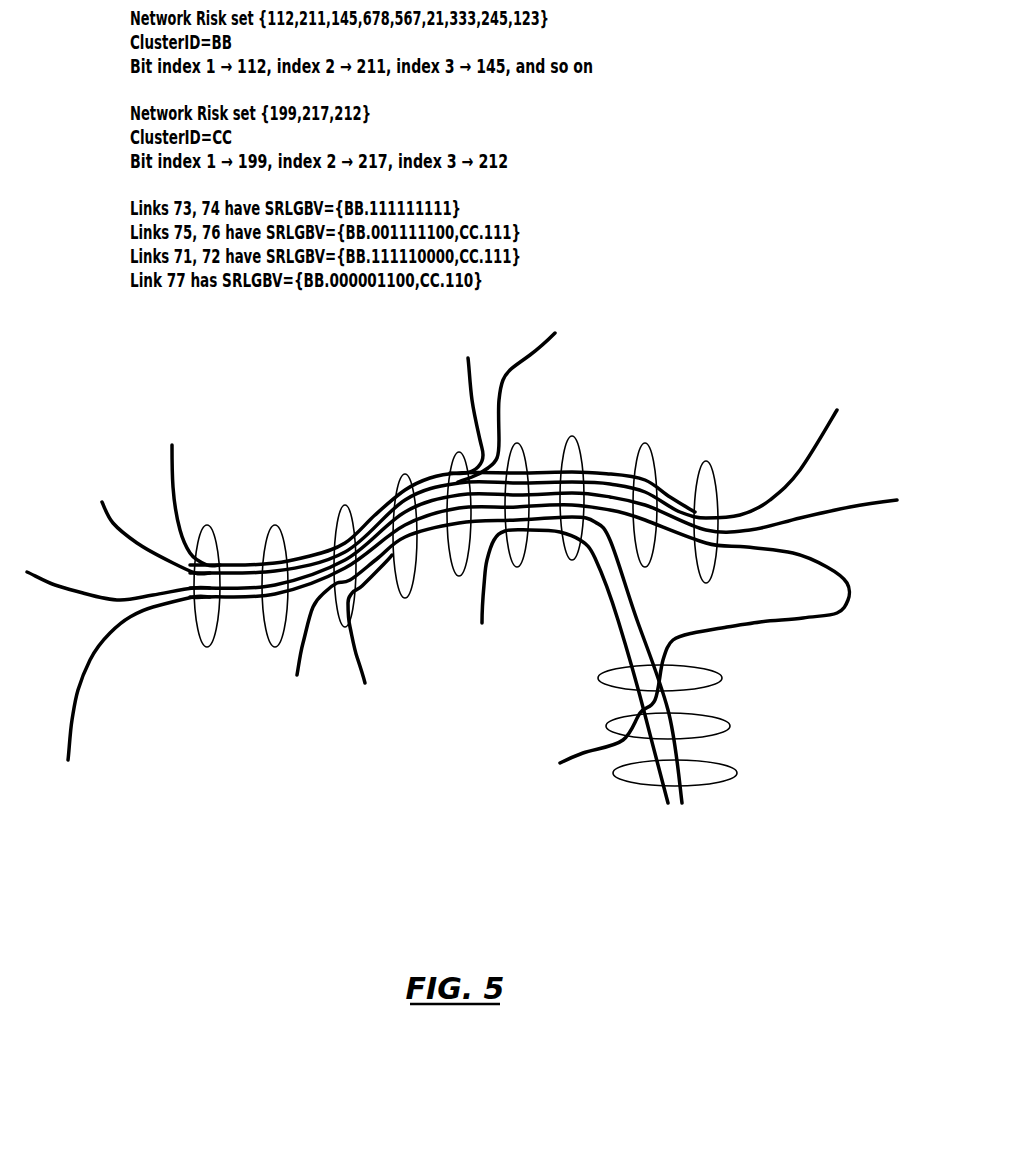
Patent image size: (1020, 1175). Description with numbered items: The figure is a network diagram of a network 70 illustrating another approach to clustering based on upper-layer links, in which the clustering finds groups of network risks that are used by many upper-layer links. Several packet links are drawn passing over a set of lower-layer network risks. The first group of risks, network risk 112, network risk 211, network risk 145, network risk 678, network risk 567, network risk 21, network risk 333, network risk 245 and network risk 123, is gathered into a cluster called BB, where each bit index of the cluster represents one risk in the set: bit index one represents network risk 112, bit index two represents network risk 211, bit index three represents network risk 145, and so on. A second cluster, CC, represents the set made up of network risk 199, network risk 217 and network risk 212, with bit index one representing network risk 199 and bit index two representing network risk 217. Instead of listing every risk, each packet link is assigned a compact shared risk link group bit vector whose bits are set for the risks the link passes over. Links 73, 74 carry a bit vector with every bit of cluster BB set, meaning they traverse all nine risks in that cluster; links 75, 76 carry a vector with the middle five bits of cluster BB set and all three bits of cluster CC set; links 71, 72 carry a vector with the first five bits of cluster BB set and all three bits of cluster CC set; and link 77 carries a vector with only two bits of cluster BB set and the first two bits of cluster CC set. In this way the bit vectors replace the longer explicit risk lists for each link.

The network 70 is at (747, 336).
The link 71 is at (172, 465).
The link 72 is at (112, 523).
The link 73 is at (83, 593).
The link 74 is at (73, 703).
The link 75 is at (295, 675).
The link 76 is at (357, 667).
The link 77 is at (482, 610).
The network risk 112 is at (199, 573).
The network risk 211 is at (266, 573).
The network risk 145 is at (337, 552).
The network risk 678 is at (397, 522).
The network risk 567 is at (451, 501).
The network risk 21 is at (512, 493).
The network risk 333 is at (564, 485).
The network risk 245 is at (638, 492).
The network risk 123 is at (698, 509).
The network risk 199 is at (676, 678).
The network risk 217 is at (686, 726).
The network risk 212 is at (693, 773).